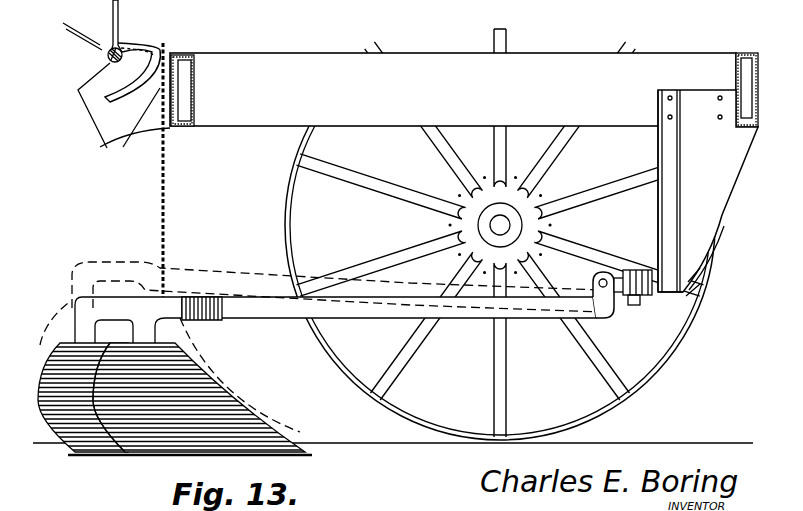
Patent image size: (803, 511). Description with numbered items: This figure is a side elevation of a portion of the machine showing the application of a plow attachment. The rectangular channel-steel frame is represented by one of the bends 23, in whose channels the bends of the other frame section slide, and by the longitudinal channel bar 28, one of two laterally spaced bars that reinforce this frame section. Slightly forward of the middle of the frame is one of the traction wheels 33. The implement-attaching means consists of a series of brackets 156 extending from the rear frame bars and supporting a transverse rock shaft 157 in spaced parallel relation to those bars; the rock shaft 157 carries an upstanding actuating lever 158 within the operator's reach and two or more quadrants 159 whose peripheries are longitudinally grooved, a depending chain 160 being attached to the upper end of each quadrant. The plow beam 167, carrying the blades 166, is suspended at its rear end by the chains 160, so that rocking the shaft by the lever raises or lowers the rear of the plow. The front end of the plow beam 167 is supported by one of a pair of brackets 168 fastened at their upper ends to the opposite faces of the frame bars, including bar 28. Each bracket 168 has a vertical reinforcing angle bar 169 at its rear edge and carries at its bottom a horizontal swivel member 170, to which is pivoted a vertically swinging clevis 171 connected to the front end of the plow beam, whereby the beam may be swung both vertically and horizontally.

The bend 23 is at (173, 55).
The longitudinal channel bar 28 is at (453, 89).
The traction wheel 33 is at (283, 222).
The bracket 156 is at (157, 87).
The rock shaft 157 is at (107, 57).
The actuating lever 158 is at (117, 16).
The quadrant 159 is at (123, 92).
The chain 160 is at (166, 207).
The blade 166 is at (100, 432).
The plow beam 167 is at (280, 307).
The bracket 168 is at (713, 200).
The reinforcing angle bar 169 is at (670, 153).
The swivel member 170 is at (650, 297).
The clevis 171 is at (622, 270).